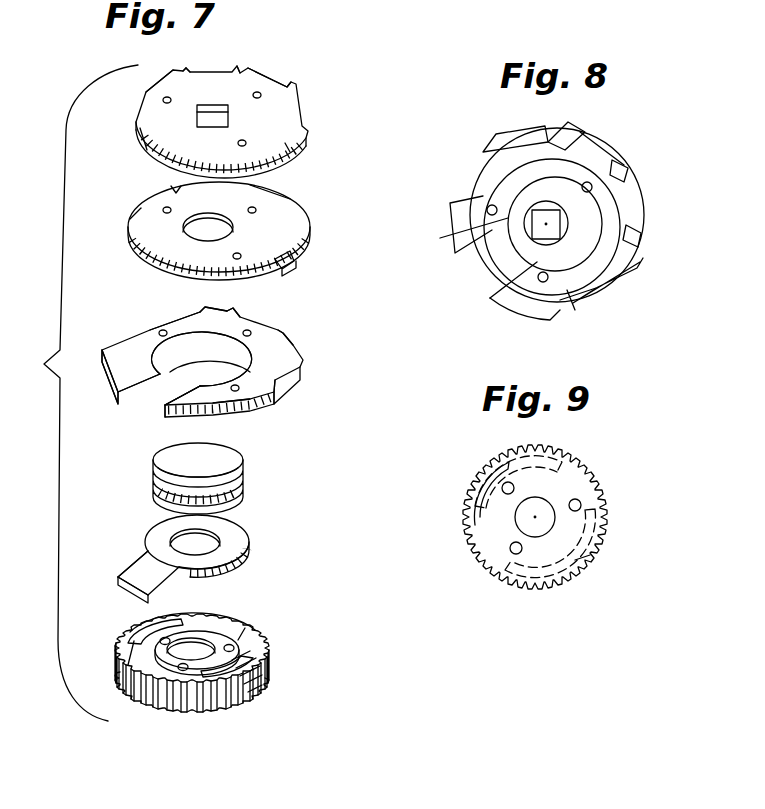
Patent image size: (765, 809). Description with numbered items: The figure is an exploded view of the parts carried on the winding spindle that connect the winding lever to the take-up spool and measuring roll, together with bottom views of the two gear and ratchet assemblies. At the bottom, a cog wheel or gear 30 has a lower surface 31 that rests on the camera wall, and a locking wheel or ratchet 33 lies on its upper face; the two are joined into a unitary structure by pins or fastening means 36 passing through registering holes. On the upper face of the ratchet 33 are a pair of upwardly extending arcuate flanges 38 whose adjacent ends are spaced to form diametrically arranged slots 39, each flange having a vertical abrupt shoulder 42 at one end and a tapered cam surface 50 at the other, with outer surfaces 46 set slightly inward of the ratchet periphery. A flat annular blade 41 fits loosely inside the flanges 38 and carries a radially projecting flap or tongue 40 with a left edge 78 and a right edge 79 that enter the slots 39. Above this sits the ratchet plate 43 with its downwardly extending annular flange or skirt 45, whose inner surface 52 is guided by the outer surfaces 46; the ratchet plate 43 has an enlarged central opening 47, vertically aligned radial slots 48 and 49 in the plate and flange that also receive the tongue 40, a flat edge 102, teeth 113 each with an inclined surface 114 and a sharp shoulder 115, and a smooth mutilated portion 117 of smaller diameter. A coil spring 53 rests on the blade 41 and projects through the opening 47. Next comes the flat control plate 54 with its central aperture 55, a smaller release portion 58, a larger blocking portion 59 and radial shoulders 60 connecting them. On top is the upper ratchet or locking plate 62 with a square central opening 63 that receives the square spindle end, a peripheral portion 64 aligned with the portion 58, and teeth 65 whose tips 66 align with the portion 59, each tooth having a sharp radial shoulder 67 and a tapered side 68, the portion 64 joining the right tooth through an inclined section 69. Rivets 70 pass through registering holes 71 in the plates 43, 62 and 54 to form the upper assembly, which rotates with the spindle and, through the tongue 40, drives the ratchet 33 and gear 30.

In FIG. 7, the cog wheel or gear 30 is at (265, 692).
In FIG. 9, the cog wheel or gear 30 is at (580, 465).
In FIG. 9, the lower surface of the gear 31 is at (585, 560).
In FIG. 7, the locking wheel or ratchet 33 is at (246, 627).
In FIG. 9, the locking wheel or ratchet 33 is at (470, 488).
In FIG. 7, the fastening means 36 is at (235, 650).
In FIG. 9, the fastening means 36 is at (510, 548).
In FIG. 7, the arcuate shaped flanges 38 is at (186, 702).
In FIG. 9, the arcuate shaped flanges 38 is at (605, 522).
In FIG. 7, the slots 39 is at (132, 696).
In FIG. 7, the flap or tongue 40 is at (135, 573).
In FIG. 7, the flat annular blade 41 is at (232, 537).
In FIG. 7, the vertical abrupt shoulder 42 is at (152, 693).
In FIG. 7, the ratchet plate 43 is at (303, 362).
In FIG. 8, the ratchet plate 43 is at (595, 257).
In FIG. 7, the annular flange or skirt 45 is at (272, 398).
In FIG. 8, the annular flange or skirt 45 is at (574, 302).
In FIG. 7, the outer surfaces of the flanges 46 is at (232, 706).
In FIG. 7, the enlarged central opening 47 is at (215, 340).
In FIG. 8, the enlarged central opening 47 is at (569, 262).
In FIG. 7, the slot 48 is at (117, 393).
In FIG. 7, the slot 49 is at (132, 401).
In FIG. 8, the slot 49 is at (485, 276).
In FIG. 7, the inclined cam surface 50 is at (126, 664).
In FIG. 7, the inner surface of flange 52 is at (158, 384).
In FIG. 8, the inner surface of flange 52 is at (590, 208).
In FIG. 7, the coil spring 53 is at (243, 487).
In FIG. 7, the flat control plate 54 is at (300, 226).
In FIG. 8, the flat control plate 54 is at (644, 220).
In FIG. 7, the central aperture 55 is at (220, 228).
In FIG. 7, the peripheral portion 58 is at (140, 210).
In FIG. 7, the peripheral portion 59 is at (268, 192).
In FIG. 7, the radial shoulders 60 is at (278, 272).
In FIG. 7, the upper ratchet or locking plate 62 is at (282, 110).
In FIG. 7, the square central opening 63 is at (226, 118).
In FIG. 7, the peripheral portion 64 is at (147, 152).
In FIG. 7, the teeth 65 is at (238, 70).
In FIG. 7, the tips of the teeth 66 is at (176, 68).
In FIG. 7, the sharp radial shoulder 67 is at (172, 72).
In FIG. 7, the tapered side of tooth 68 is at (250, 76).
In FIG. 7, the inclined section 69 is at (285, 143).
In FIG. 8, the rivets 70 is at (541, 281).
In FIG. 7, the registering holes 71 is at (252, 333).
In FIG. 7, the left edge of tongue 78 is at (118, 577).
In FIG. 7, the right edge of tongue 79 is at (147, 596).
In FIG. 7, the flat surface or edge 102 is at (148, 337).
In FIG. 8, the flat surface or edge 102 is at (600, 290).
In FIG. 7, the teeth 113 is at (213, 311).
In FIG. 8, the teeth 113 is at (515, 135).
In FIG. 7, the inclined surface 114 is at (241, 317).
In FIG. 8, the inclined surface 114 is at (568, 130).
In FIG. 7, the shoulder 115 is at (287, 336).
In FIG. 8, the shoulder 115 is at (636, 238).
In FIG. 7, the smooth or mutilated portion 117 is at (250, 406).
In FIG. 8, the smooth or mutilated portion 117 is at (478, 188).